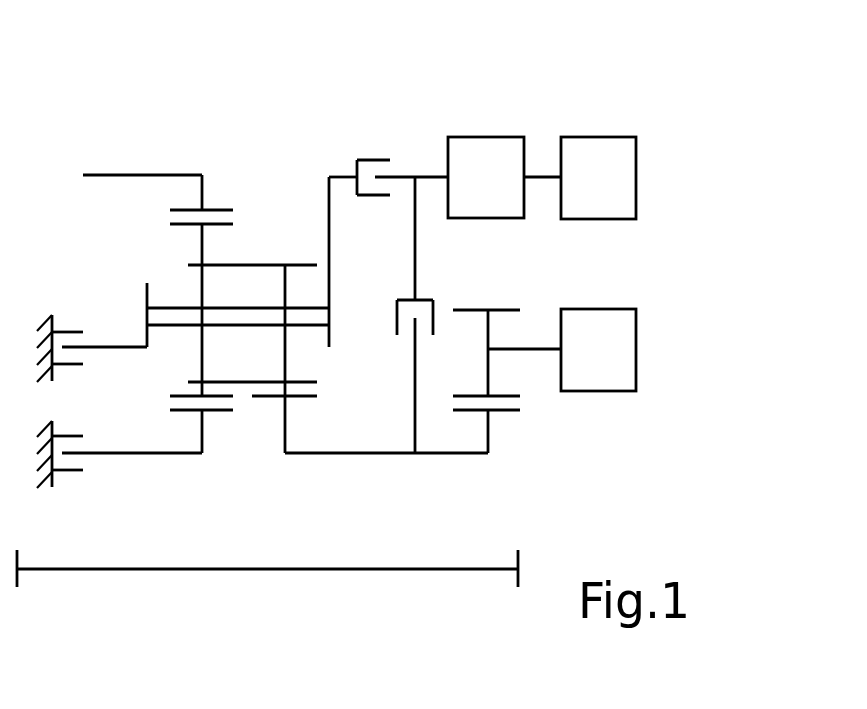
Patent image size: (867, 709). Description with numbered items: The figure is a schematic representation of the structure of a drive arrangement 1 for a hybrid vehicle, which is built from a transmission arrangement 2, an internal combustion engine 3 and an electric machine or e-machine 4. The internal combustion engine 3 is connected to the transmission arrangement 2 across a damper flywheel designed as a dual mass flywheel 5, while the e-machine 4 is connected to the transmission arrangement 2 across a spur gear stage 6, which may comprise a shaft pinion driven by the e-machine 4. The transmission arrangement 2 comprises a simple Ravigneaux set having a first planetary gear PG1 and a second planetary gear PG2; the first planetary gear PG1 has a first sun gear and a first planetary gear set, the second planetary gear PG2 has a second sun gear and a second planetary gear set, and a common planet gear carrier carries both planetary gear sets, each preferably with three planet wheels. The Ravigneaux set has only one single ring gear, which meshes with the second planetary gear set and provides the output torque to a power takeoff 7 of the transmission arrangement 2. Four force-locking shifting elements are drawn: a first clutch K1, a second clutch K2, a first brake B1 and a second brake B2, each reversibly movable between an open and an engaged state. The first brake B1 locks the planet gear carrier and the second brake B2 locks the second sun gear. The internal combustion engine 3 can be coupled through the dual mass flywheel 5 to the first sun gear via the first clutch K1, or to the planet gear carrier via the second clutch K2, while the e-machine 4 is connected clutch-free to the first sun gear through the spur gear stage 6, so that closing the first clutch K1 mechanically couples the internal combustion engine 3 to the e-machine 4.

The drive arrangement 1 is at (208, 126).
The transmission arrangement 2 is at (277, 569).
The internal combustion engine 3 is at (636, 177).
The electric machine 4 is at (636, 349).
The dual mass flywheel 5 is at (485, 137).
The spur gear stage 6 is at (537, 412).
The power takeoff 7 is at (110, 175).
The first clutch K1 is at (399, 356).
The second clutch K2 is at (400, 160).
The first brake B1 is at (92, 332).
The second brake B2 is at (119, 442).
The first planetary gear PG1 is at (283, 475).
The second planetary gear PG2 is at (205, 475).